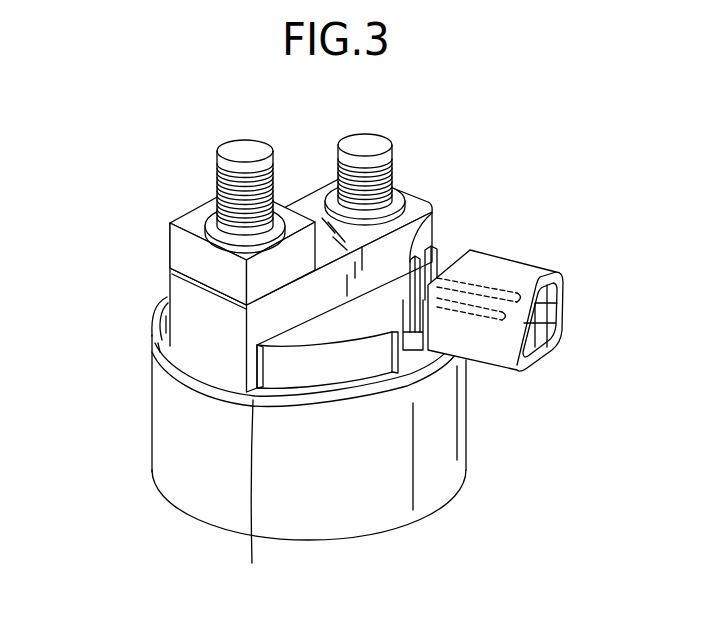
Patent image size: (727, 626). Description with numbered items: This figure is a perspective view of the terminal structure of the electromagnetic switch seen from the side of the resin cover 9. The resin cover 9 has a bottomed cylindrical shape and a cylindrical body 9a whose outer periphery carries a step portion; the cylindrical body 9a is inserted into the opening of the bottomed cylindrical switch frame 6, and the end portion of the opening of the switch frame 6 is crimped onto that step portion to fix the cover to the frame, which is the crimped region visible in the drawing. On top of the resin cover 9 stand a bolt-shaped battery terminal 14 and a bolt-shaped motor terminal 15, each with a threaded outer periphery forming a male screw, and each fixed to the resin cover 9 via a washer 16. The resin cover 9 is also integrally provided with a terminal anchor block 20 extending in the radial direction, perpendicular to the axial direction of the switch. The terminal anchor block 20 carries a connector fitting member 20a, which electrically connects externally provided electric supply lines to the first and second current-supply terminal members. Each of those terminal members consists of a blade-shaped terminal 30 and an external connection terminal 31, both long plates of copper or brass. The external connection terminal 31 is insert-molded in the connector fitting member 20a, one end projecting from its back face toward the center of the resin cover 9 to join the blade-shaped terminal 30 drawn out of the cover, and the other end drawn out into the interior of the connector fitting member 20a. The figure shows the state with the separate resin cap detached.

The switch frame 6 is at (198, 450).
The resin cover 9 is at (213, 347).
The cylindrical body 9a is at (340, 367).
The battery terminal 14 is at (218, 170).
The motor terminal 15 is at (394, 158).
The washer 16 is at (205, 207).
The terminal anchor block 20 is at (409, 320).
The connector fitting member 20a is at (528, 274).
The blade-shaped terminal 30 is at (417, 256).
The external connection terminal 31 is at (498, 285).